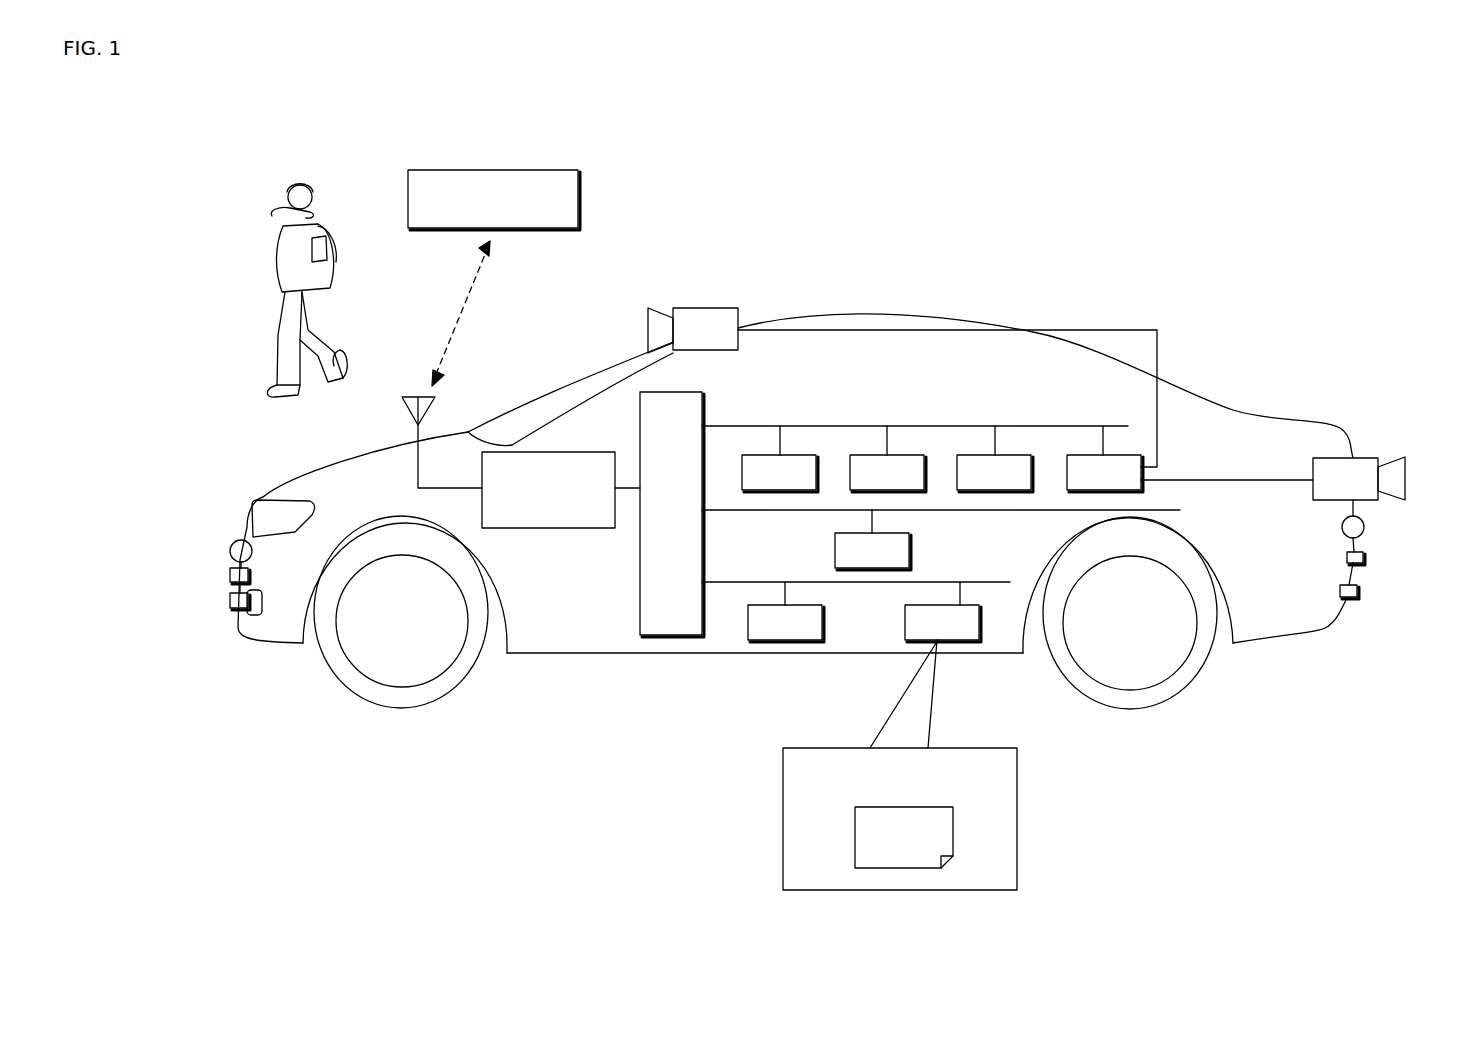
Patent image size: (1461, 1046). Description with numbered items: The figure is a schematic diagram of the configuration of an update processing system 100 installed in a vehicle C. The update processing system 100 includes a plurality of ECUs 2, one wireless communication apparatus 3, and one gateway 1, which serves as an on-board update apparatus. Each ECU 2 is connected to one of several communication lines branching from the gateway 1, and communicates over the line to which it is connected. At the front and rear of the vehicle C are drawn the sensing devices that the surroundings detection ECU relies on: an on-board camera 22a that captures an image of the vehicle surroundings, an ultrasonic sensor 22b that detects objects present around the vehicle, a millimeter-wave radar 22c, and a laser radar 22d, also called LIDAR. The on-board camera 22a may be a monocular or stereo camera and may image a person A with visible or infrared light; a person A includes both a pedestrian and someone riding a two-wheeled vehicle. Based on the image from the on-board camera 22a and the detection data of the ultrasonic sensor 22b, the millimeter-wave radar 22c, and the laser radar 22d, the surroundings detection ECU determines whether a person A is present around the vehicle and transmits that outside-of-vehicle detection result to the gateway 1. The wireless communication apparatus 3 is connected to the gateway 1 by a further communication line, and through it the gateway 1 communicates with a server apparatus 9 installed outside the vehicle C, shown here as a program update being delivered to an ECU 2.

The gateway 1 is at (703, 413).
The ECU 2 is at (855, 416).
The wireless communication apparatus 3 is at (588, 452).
The server apparatus 9 is at (578, 188).
The on-board camera 22a is at (740, 293).
The ultrasonic sensor 22b is at (238, 542).
The millimeter-wave radar 22c is at (229, 574).
The laser radar (LIDAR) 22d is at (229, 599).
The update processing system 100 is at (1173, 366).
The person A is at (310, 212).
The vehicle C is at (1233, 410).